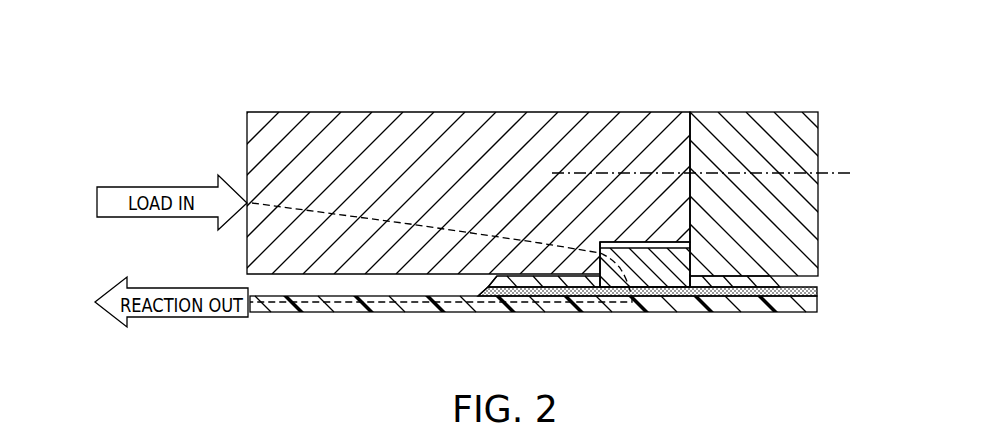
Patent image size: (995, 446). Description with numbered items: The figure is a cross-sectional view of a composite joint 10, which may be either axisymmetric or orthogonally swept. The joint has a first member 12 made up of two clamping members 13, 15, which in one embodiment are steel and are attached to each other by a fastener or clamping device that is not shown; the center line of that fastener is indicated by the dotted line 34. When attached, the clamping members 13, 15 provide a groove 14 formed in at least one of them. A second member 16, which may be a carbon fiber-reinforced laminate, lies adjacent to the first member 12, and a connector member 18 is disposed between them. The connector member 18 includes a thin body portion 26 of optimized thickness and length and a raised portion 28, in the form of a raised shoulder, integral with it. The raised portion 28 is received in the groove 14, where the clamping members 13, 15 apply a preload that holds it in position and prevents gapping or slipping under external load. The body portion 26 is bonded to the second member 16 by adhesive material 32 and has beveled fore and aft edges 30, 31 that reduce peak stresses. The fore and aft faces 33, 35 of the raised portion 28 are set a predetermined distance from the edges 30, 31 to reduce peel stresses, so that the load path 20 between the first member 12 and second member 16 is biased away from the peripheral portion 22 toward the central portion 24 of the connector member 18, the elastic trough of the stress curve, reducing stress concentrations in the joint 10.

The composite joint 10 is at (526, 161).
The first member 12 is at (675, 104).
The clamping member 13 is at (323, 247).
The groove 14 is at (622, 241).
The clamping member 15 is at (810, 147).
The second member 16 is at (590, 303).
The connector member 18 is at (670, 268).
The load path 20 is at (385, 304).
The peripheral portion 22 is at (507, 298).
The central portion 24 is at (600, 270).
The body portion 26 is at (531, 308).
The raised portion 28 is at (653, 242).
The beveled edge 30 is at (496, 275).
The beveled edge 31 is at (778, 278).
The adhesive material 32 is at (668, 293).
The fore face 33 is at (598, 248).
The dotted line 34 is at (832, 175).
The aft face 35 is at (692, 268).